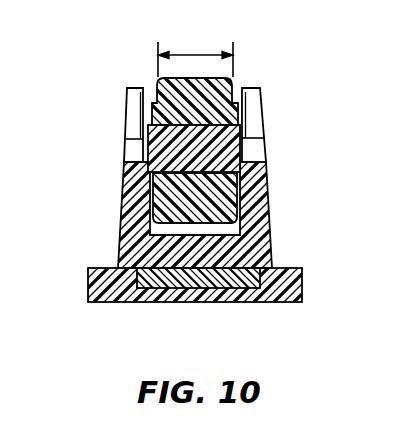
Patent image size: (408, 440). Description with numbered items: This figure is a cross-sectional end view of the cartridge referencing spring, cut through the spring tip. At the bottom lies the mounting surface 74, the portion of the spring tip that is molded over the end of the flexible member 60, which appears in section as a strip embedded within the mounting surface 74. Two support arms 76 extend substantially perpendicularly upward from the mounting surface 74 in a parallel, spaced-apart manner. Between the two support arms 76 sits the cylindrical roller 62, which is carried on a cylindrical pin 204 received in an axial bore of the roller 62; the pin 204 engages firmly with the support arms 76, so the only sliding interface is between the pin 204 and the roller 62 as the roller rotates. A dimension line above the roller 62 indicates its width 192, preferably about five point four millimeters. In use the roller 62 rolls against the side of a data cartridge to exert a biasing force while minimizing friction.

The width 192 is at (196, 55).
The roller 62 is at (226, 112).
The cylindrical pin 204 is at (163, 147).
The support arms 76 is at (132, 203).
The mounting surface 74 is at (292, 282).
The flexible member 60 is at (208, 276).